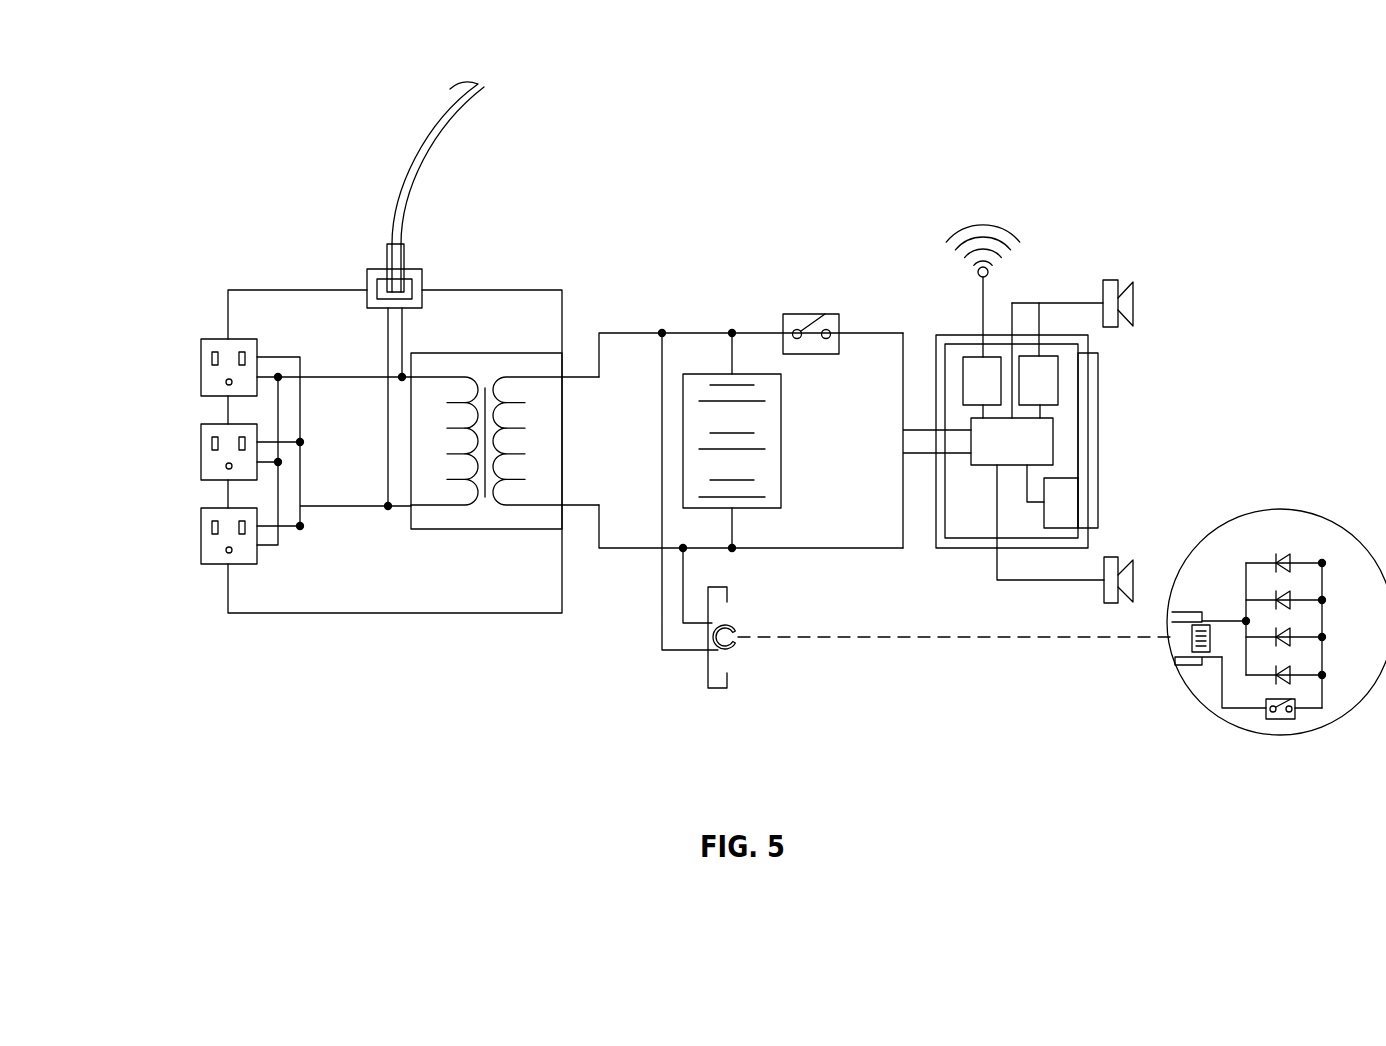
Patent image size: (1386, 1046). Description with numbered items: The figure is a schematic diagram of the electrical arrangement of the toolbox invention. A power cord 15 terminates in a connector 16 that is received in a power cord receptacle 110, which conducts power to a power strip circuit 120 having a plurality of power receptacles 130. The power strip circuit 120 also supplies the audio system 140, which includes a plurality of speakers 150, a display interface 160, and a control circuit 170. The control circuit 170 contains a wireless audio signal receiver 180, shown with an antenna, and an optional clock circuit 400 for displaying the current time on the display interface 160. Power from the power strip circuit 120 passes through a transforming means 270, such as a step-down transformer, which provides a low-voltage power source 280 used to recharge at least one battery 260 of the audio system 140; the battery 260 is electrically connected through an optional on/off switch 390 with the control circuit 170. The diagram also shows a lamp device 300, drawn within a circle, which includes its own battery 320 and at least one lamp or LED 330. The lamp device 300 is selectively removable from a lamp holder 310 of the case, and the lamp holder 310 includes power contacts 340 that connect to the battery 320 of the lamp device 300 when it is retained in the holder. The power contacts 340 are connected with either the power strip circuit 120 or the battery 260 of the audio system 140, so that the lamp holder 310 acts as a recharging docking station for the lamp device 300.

The power cord 15 is at (410, 158).
The connector 16 is at (387, 258).
The power cord receptacle 110 is at (423, 277).
The power strip circuit 120 is at (296, 288).
The power receptacles 130 is at (201, 370).
The audio system 140 is at (978, 552).
The speakers 150 is at (1108, 280).
The display interface 160 is at (1099, 411).
The control circuit 170 is at (1053, 440).
The wireless audio signal receiver 180 is at (967, 371).
The battery 260 is at (716, 373).
The transforming means 270 is at (470, 352).
The low-voltage power source 280 is at (650, 338).
The lamp device 300 is at (1233, 760).
The lamp holder 310 is at (724, 708).
The battery 320 is at (1190, 641).
The LED 330 is at (1285, 557).
The power contacts 340 is at (736, 653).
The on/off switch 390 is at (797, 318).
The clock circuit 400 is at (1028, 353).